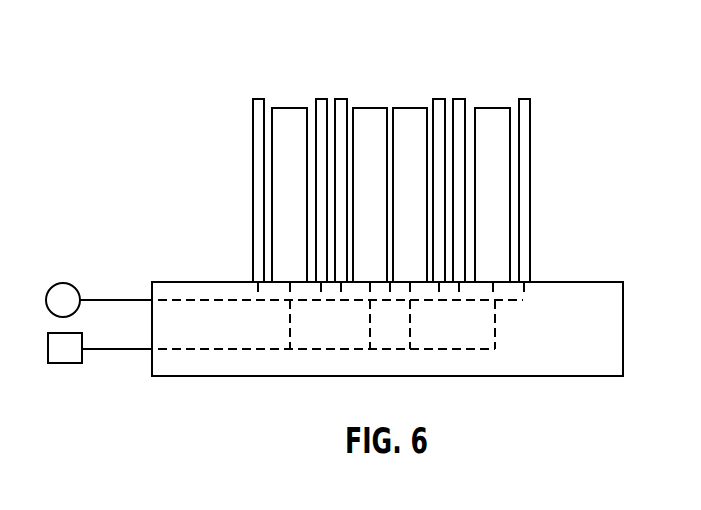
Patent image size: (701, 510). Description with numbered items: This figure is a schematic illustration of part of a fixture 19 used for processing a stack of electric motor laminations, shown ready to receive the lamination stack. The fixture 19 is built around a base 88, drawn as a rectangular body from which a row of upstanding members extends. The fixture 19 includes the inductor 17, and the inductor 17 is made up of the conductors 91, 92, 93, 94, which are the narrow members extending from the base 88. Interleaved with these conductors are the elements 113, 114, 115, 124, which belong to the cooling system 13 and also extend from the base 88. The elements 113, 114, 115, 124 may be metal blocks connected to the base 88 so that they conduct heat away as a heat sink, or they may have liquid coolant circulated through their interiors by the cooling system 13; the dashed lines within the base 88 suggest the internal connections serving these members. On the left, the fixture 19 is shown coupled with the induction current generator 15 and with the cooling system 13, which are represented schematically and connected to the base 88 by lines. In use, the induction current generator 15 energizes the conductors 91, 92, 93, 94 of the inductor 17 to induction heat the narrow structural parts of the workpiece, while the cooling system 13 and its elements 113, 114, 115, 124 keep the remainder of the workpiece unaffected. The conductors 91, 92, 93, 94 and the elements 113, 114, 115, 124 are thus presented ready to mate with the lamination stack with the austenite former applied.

The base 88 is at (609, 343).
The fixture 19 is at (418, 295).
The induction heater coil/inductor 17 is at (533, 160).
The cooling element 115 is at (290, 114).
The conductor 94 is at (321, 104).
The conductor 93 is at (342, 104).
The cooling element 114 is at (375, 116).
The cooling element 113 is at (407, 114).
The conductor 92 is at (438, 104).
The conductor 91 is at (460, 104).
The cooling element 124 is at (493, 115).
The induction current generator 15 is at (61, 284).
The cooling system 13 is at (63, 363).